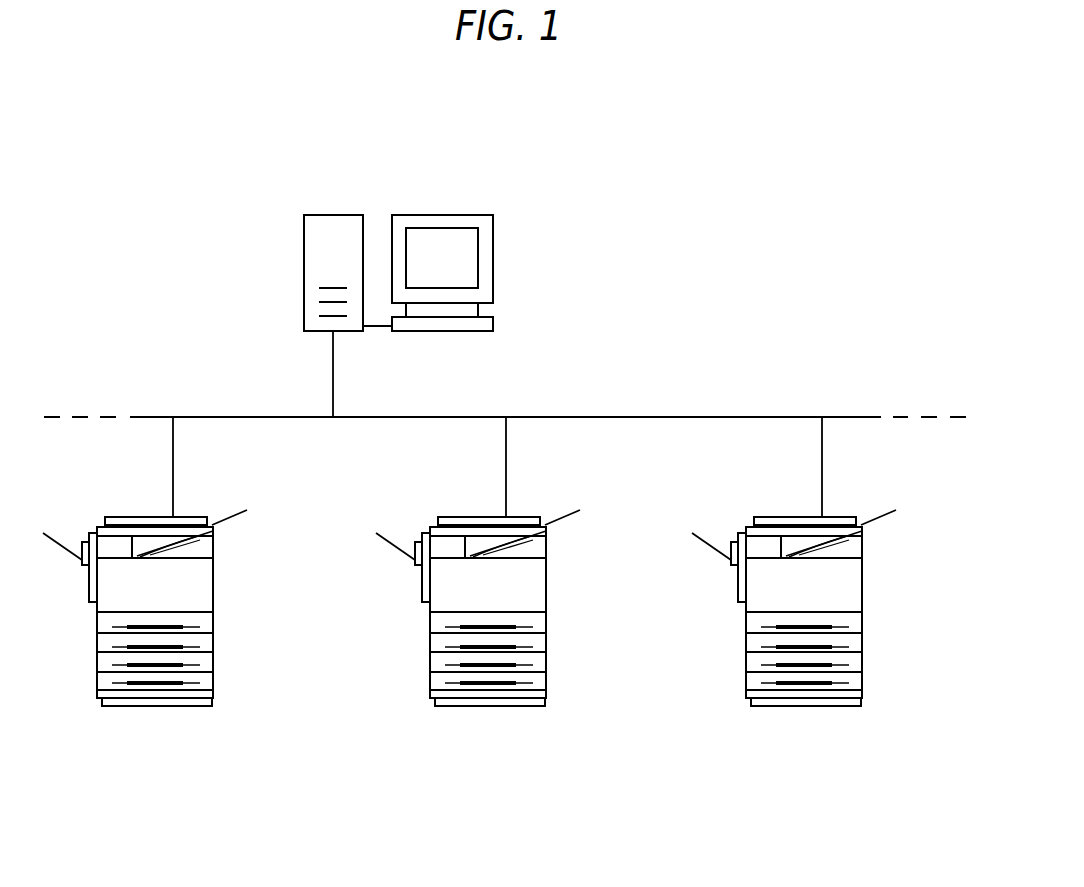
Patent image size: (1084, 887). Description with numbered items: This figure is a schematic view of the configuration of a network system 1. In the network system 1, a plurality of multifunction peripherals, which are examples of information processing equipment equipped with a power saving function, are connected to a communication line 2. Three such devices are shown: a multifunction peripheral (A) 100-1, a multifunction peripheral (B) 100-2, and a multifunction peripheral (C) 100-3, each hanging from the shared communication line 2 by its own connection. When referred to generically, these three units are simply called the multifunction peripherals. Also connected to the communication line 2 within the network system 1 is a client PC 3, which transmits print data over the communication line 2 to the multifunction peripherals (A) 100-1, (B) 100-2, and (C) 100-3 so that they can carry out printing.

The network system 1 is at (732, 179).
The communication line 2 is at (650, 416).
The client PC 3 is at (328, 215).
The multifunction peripheral (A) 100-1 is at (158, 706).
The multifunction peripheral (B) 100-2 is at (478, 646).
The multifunction peripheral (C) 100-3 is at (794, 646).